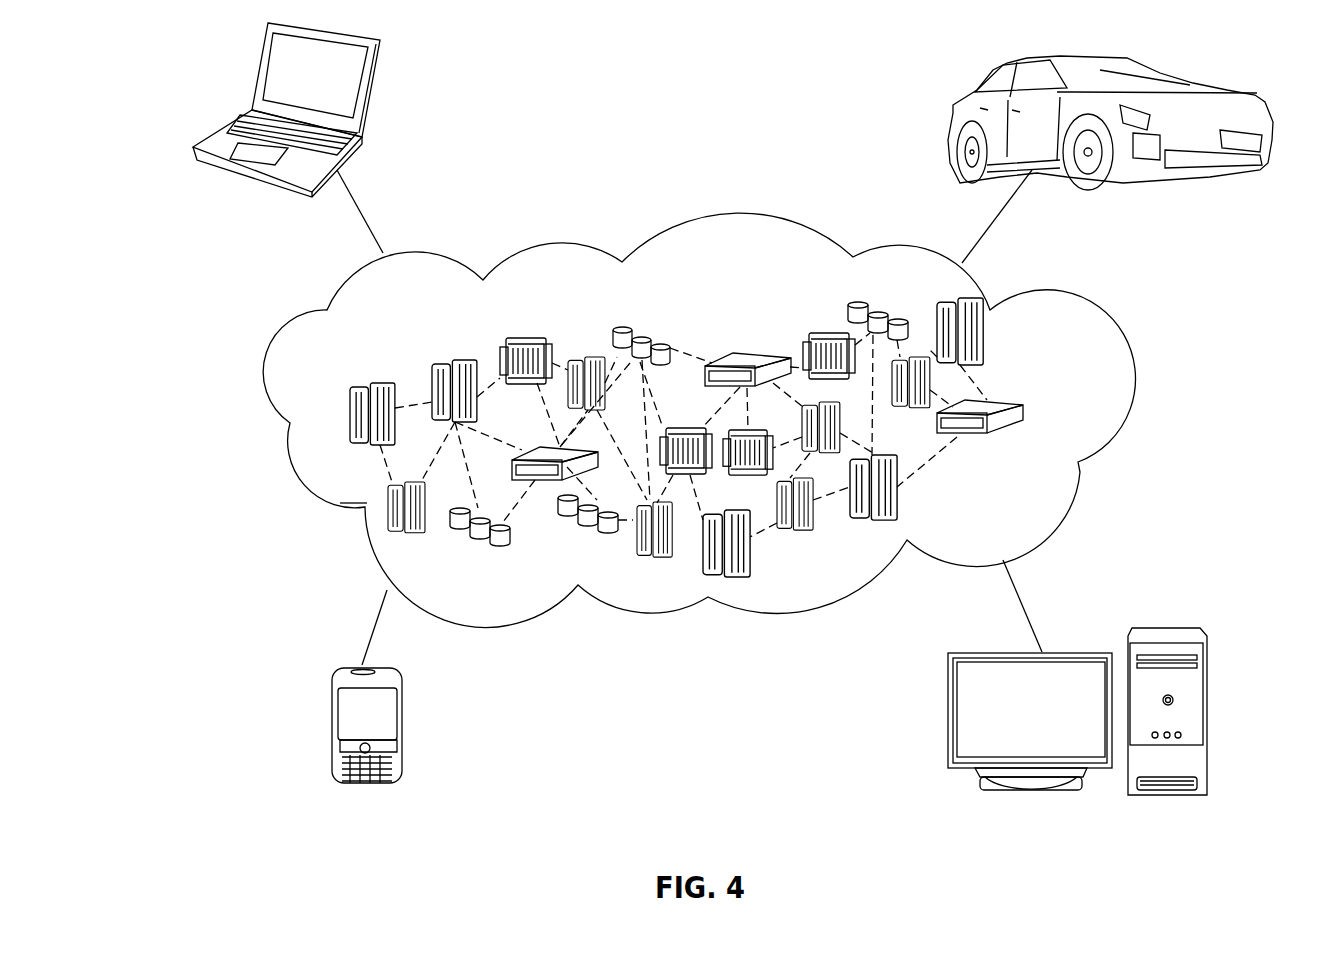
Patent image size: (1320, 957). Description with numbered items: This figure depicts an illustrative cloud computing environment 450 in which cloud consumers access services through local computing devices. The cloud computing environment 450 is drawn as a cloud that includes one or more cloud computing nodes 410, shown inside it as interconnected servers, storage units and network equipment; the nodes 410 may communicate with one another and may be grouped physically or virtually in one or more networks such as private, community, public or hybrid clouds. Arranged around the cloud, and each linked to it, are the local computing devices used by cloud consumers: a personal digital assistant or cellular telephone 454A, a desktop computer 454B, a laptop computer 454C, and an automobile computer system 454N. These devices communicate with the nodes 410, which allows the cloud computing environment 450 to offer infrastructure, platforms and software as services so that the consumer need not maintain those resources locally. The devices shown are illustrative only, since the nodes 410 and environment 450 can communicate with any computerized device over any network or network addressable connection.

The cloud computing nodes 410 is at (1062, 413).
The cloud computing environment 450 is at (1090, 330).
The personal digital assistant (PDA) or cellular telephone 454A is at (332, 728).
The desktop computer 454B is at (1170, 625).
The laptop computer 454C is at (372, 95).
The automobile computer system 454N is at (958, 102).